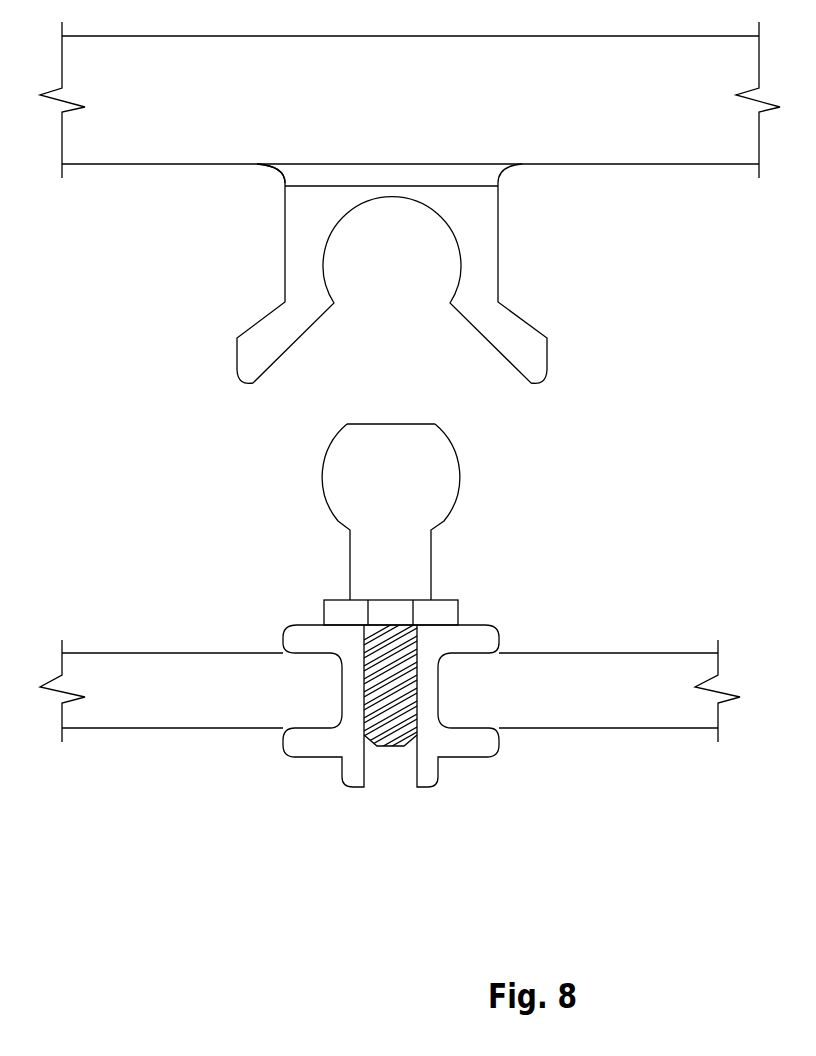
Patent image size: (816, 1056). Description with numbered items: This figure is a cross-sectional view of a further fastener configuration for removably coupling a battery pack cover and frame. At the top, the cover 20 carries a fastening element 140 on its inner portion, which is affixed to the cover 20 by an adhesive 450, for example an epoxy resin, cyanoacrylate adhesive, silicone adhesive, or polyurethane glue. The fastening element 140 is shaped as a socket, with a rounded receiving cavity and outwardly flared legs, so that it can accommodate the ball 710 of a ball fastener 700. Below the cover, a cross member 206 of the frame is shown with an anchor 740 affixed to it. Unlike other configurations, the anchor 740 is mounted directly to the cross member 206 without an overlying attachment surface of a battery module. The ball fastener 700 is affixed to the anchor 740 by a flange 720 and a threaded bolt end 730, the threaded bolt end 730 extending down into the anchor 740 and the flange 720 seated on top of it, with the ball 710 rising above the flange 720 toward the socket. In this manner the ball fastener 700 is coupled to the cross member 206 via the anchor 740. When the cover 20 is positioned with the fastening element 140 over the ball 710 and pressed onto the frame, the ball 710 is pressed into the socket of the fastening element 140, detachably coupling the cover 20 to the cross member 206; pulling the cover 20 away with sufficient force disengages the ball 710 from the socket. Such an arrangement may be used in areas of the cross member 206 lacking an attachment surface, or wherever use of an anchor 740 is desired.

The cover 20 is at (158, 107).
The fastening element 140 is at (498, 258).
The adhesive 450 is at (281, 174).
The ball fastener 700 is at (437, 512).
The ball head 710 is at (460, 472).
The flange 720 is at (442, 600).
The threaded bolt end 730 is at (392, 746).
The anchor 740 is at (482, 757).
The cross member 206 is at (605, 706).